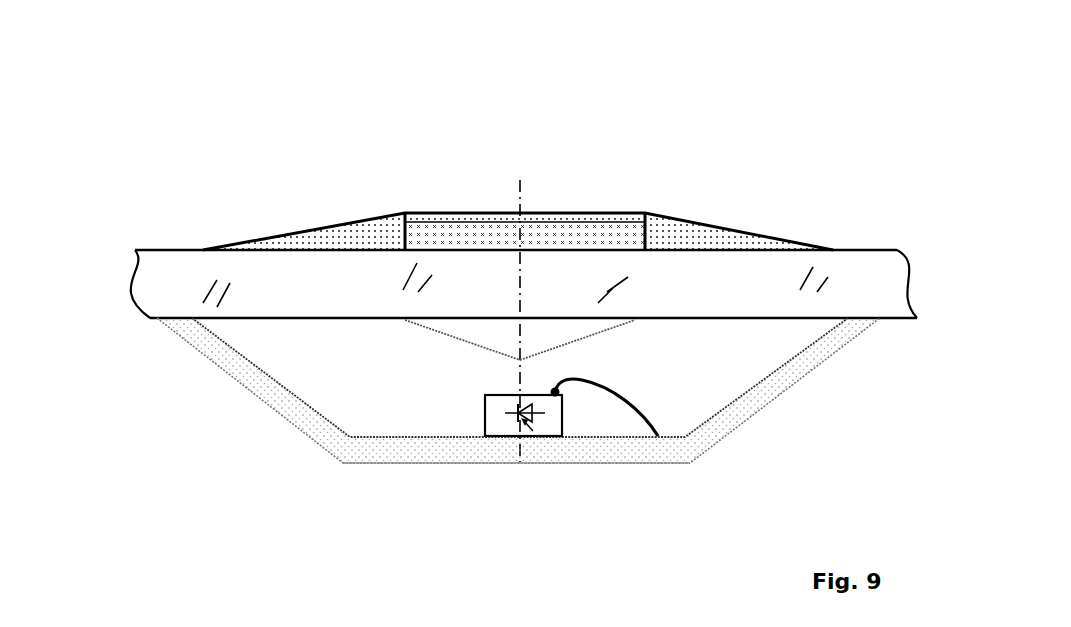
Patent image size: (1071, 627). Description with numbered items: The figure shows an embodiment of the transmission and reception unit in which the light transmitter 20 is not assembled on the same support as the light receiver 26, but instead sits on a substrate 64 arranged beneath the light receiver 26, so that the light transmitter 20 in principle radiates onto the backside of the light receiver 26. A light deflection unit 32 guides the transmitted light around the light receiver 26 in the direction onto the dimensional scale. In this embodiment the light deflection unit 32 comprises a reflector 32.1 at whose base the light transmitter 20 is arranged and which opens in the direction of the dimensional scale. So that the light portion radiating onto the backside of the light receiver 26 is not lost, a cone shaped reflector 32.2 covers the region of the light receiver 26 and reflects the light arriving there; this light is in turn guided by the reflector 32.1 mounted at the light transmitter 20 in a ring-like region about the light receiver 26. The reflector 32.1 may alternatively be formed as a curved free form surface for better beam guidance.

The light transmitter 20 is at (548, 422).
The light receiver 26 is at (604, 236).
The light deflection unit 32 is at (483, 433).
The reflector 32.1 is at (322, 411).
The cone shaped reflector 32.2 is at (473, 345).
The substrate 64 is at (413, 454).